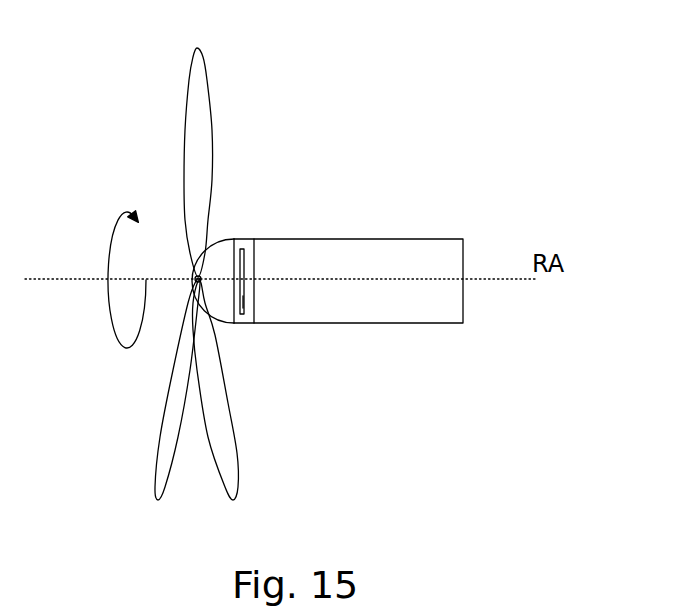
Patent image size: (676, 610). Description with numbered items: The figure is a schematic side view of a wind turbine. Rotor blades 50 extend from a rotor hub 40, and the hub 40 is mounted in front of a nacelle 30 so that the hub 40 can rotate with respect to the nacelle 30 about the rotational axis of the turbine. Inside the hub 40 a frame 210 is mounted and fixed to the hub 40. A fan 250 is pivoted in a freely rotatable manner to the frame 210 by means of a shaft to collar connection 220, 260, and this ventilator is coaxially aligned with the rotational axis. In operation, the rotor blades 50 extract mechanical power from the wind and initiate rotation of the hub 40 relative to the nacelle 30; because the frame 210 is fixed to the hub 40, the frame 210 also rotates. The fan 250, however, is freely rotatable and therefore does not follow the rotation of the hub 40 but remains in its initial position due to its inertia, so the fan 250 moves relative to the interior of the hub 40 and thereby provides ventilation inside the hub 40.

The nacelle 30 is at (448, 239).
The rotor hub 40 is at (240, 239).
The rotor blades 50 is at (212, 147).
The frame 210 is at (238, 278).
The shaft 220 is at (324, 244).
The collar 260 is at (242, 277).
The fan 250 is at (243, 302).